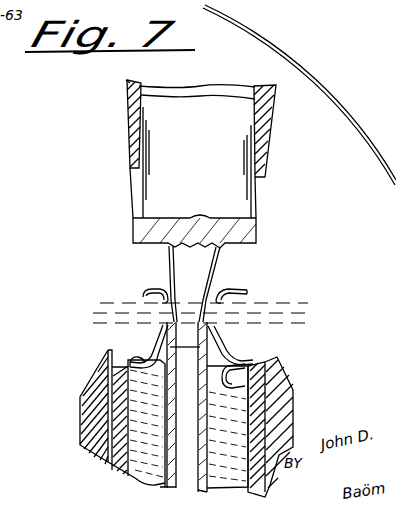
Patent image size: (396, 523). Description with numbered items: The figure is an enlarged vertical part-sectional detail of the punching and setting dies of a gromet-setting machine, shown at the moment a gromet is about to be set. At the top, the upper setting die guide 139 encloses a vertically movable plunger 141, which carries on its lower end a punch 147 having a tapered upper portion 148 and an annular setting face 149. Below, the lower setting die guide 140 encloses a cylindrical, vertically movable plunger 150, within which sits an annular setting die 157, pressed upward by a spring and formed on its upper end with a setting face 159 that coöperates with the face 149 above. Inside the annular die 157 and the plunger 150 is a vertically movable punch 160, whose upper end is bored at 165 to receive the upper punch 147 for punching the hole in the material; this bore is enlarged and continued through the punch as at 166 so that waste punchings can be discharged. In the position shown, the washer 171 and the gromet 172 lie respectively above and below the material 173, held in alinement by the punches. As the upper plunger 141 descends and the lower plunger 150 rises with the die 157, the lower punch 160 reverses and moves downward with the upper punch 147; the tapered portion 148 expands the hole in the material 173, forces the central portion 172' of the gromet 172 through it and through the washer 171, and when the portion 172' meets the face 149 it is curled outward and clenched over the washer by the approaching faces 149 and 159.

The upper setting die guide 139 is at (125, 96).
The plunger 141 is at (201, 164).
The annular setting face 149 is at (232, 248).
The tapered upper portion 148 is at (190, 278).
The washer 171 is at (140, 291).
The material 173 is at (115, 312).
The central portion of the gromet 172' is at (101, 346).
The gromet 172 is at (301, 349).
The punch 147 is at (195, 346).
The bore 165 is at (155, 348).
The lower setting die guide 140 is at (98, 412).
The plunger 150 is at (125, 430).
The annular setting die 157 is at (147, 449).
The enlarged bore 166 is at (184, 477).
The punch 160 is at (213, 418).
The setting face 159 is at (235, 375).